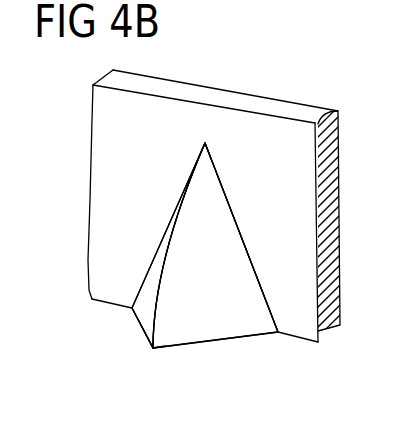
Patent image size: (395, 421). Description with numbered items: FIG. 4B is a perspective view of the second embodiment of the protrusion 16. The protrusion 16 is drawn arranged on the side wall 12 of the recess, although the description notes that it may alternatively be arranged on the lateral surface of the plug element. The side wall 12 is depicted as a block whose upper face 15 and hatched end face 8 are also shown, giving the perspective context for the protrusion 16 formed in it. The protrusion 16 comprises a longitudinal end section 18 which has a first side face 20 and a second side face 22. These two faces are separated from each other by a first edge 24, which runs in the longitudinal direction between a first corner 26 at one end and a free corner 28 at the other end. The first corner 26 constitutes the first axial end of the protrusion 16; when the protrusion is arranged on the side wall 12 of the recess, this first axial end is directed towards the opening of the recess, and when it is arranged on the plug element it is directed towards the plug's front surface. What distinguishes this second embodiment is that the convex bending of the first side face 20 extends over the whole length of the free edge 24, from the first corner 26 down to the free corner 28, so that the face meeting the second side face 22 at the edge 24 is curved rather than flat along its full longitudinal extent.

The cutting insert body / side face 8 is at (307, 111).
The side wall 12 is at (111, 127).
The top face 15 is at (183, 83).
The protrusion 16 is at (147, 199).
The longitudinal end section 18 is at (238, 222).
The first side face 20 is at (160, 256).
The second side face 22 is at (245, 285).
The first edge 24 is at (157, 300).
The first corner 26 is at (204, 143).
The free corner 28 is at (152, 350).